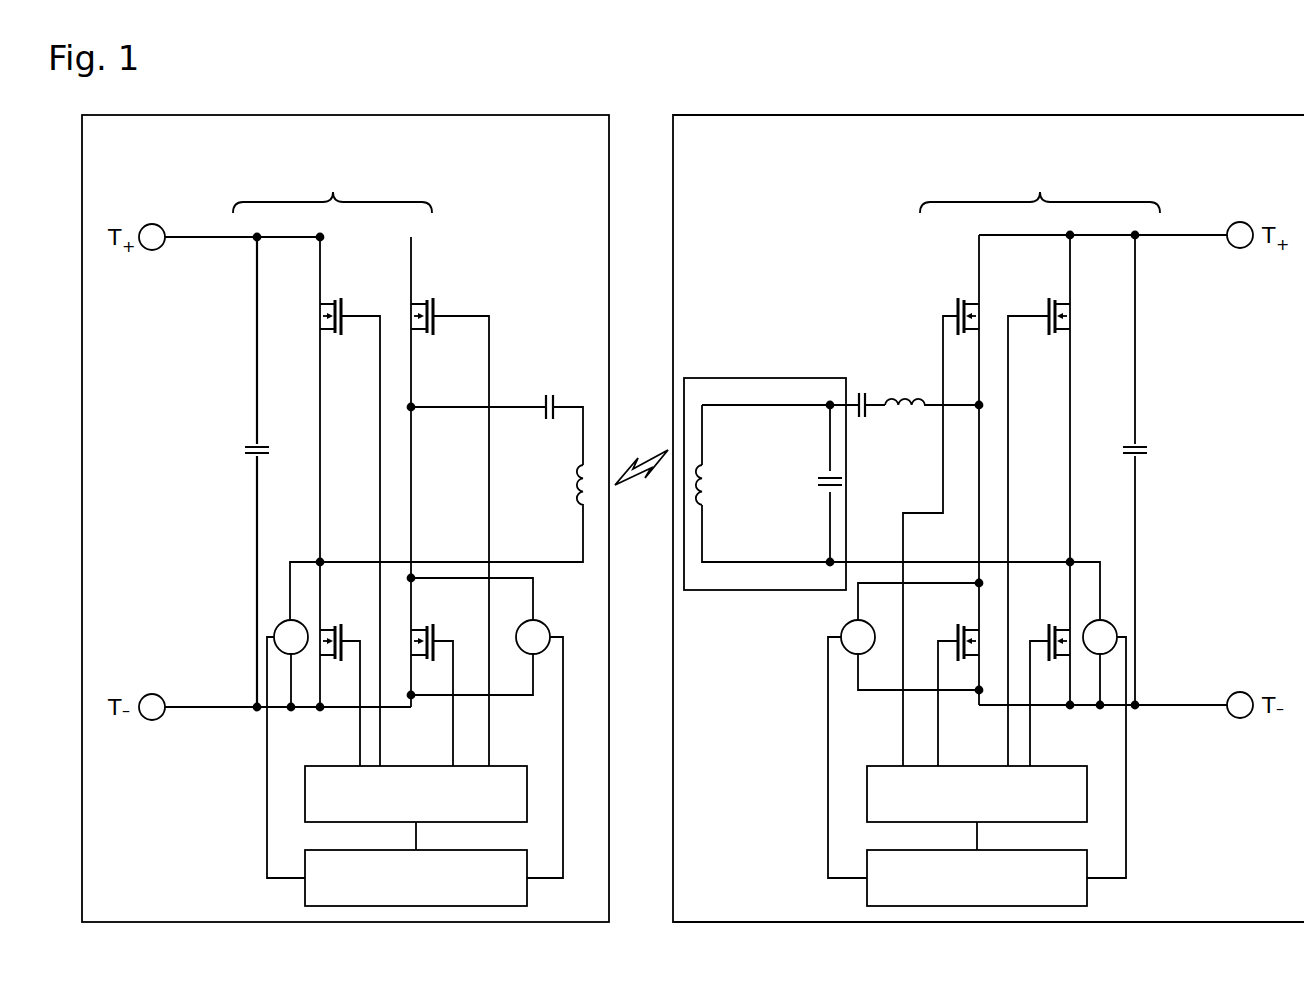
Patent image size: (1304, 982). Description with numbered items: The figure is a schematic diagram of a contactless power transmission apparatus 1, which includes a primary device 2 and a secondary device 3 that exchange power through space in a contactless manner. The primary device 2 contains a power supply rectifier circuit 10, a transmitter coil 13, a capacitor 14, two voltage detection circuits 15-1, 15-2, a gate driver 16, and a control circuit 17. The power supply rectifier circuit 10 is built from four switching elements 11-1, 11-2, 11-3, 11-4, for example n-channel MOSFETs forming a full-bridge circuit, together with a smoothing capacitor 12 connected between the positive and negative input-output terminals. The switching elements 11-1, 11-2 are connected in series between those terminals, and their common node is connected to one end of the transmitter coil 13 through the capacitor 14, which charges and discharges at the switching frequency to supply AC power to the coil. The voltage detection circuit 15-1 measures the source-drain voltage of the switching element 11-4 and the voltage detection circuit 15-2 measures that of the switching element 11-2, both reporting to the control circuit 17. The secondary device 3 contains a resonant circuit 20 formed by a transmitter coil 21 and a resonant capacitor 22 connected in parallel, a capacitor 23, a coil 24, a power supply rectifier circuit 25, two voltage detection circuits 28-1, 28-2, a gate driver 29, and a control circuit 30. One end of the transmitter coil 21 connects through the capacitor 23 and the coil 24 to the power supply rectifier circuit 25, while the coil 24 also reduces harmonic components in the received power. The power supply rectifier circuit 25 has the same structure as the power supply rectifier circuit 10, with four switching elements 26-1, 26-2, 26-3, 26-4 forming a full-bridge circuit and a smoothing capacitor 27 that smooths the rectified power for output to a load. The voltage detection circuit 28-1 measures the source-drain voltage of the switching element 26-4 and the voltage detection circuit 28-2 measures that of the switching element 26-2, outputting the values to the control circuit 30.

The contactless power transmission apparatus 1 is at (1200, 938).
The primary device 2 is at (558, 115).
The secondary device 3 is at (1205, 115).
The power supply rectifier circuit 10 is at (332, 188).
The switching element 11-1 is at (338, 300).
The switching element 11-2 is at (336, 626).
The switching element 11-3 is at (436, 300).
The switching element 11-4 is at (448, 612).
The smoothing capacitor 12 is at (248, 448).
The transmitter coil 13 is at (574, 480).
The capacitor 14 is at (549, 393).
The voltage detection circuit 15-1 is at (548, 624).
The voltage detection circuit 15-2 is at (277, 620).
The gate driver 16 is at (505, 766).
The control circuit 17 is at (490, 850).
The resonant circuit 20 is at (765, 448).
The transmitter coil 21 is at (712, 482).
The resonant capacitor 22 is at (818, 486).
The capacitor 23 is at (862, 420).
The coil 24 is at (903, 397).
The power supply rectifier circuit 25 is at (1040, 188).
The switching element 26-1 is at (957, 300).
The switching element 26-2 is at (960, 628).
The switching element 26-3 is at (1072, 308).
The switching element 26-4 is at (1052, 628).
The smoothing capacitor 27 is at (1150, 452).
The voltage detection circuit 28-1 is at (841, 630).
The voltage detection circuit 28-2 is at (1104, 620).
The gate driver 29 is at (1050, 766).
The control circuit 30 is at (1045, 850).